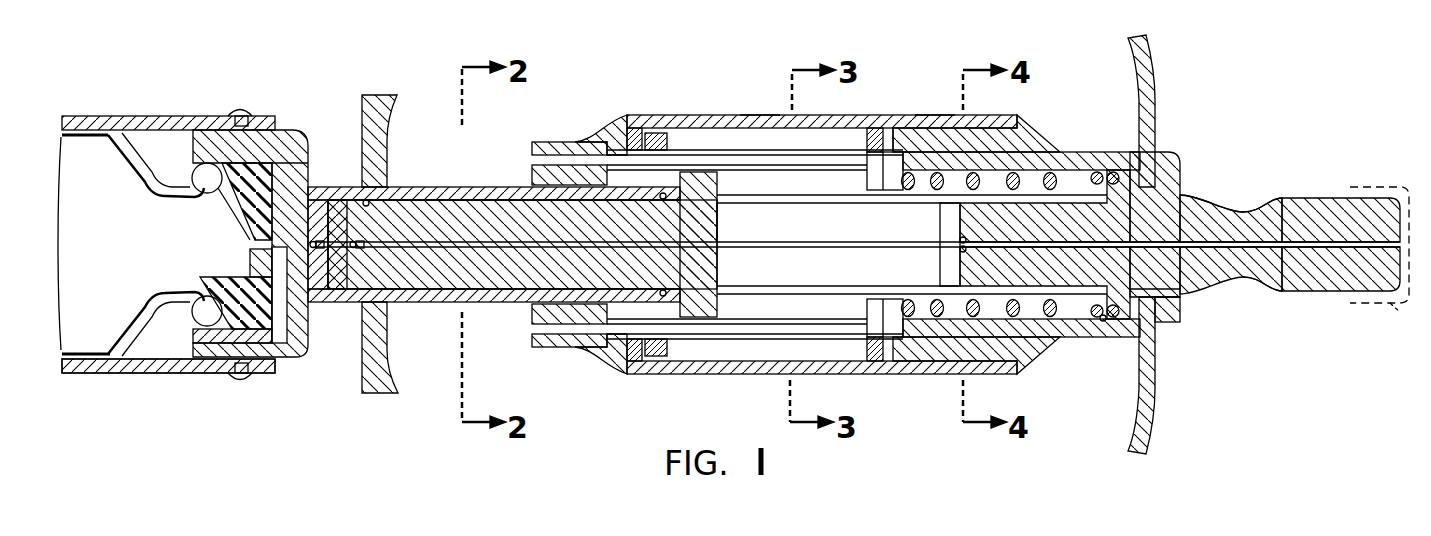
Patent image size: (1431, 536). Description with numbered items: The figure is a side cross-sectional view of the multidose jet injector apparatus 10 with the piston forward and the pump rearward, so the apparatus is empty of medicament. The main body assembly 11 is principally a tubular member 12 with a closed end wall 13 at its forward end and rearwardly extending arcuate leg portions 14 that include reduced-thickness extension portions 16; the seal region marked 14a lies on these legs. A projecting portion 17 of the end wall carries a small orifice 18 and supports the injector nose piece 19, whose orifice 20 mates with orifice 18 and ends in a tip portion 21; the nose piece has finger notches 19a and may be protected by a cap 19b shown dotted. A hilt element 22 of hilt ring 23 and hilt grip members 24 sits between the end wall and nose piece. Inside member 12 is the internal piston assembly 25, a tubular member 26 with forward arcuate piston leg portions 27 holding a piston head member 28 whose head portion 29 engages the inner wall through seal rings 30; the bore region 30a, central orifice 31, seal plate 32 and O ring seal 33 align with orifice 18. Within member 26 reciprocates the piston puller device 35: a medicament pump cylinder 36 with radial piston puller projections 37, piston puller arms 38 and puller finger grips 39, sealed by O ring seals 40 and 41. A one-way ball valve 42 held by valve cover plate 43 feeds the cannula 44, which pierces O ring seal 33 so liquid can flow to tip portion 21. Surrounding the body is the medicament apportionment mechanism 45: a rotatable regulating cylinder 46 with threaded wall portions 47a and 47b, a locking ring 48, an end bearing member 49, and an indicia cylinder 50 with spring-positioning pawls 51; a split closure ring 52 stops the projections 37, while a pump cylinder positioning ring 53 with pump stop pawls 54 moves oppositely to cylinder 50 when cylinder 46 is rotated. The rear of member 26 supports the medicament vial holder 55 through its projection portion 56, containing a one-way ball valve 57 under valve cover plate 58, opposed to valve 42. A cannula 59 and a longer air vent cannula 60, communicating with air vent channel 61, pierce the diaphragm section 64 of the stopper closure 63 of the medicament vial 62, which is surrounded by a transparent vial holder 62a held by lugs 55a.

The jet injector apparatus 10 is at (687, 112).
The main body assembly 11 is at (1066, 152).
The tubular member 12 is at (1100, 166).
The closed end wall 13 is at (1150, 270).
The arcuate leg portions 14 is at (727, 160).
The seal 14a is at (669, 143).
The arcuate leg extension portions 16 is at (563, 160).
The projecting portion 17 is at (1188, 180).
The orifice 18 is at (1206, 200).
The injector nose piece 19 is at (1277, 263).
The finger notches 19a is at (1247, 210).
The cap or closure member 19b is at (1400, 306).
The orifice 20 is at (1280, 235).
The tip portion 21 is at (1409, 225).
The hilt element 22 is at (1160, 330).
The hilt ring 23 is at (1158, 316).
The hilt grip members 24 is at (1158, 87).
The internal piston assembly 25 is at (838, 304).
The tubular member 26 is at (474, 195).
The arcuate piston leg portions 27 is at (810, 198).
The piston head member 28 is at (1045, 244).
The piston head portion 29 is at (1107, 322).
The seal rings 30 is at (1152, 152).
The body bore 30a is at (462, 241).
The orifice 31 is at (998, 247).
The seal plate 32 is at (939, 222).
The O ring seal 33 is at (967, 238).
The piston puller device 35 is at (720, 221).
The medicament pump cylinder 36 is at (504, 219).
The piston puller projections 37 is at (719, 184).
The piston puller arms 38 is at (456, 187).
The puller finger grips 39 is at (397, 116).
The O ring seal 40 is at (372, 200).
The O ring seal 41 is at (665, 202).
The one-way ball valve 42 is at (362, 243).
The valve cover plate 43 is at (348, 292).
The cannula 44 is at (678, 250).
The medicament apportionment mechanism 45 is at (887, 115).
The medicament quantity regulating cylinder 46 is at (806, 127).
The internal threaded wall portion 47a is at (755, 130).
The internal threaded wall portion 47b is at (933, 122).
The locking ring 48 is at (637, 116).
The end bearing member 49 is at (615, 116).
The indicia cylinder 50 is at (1012, 140).
The spring-positioning pawls 51 is at (890, 183).
The split closure ring 52 is at (537, 142).
The pump cylinder positioning ring 53 is at (866, 142).
The pump stop pawls 54 is at (866, 183).
The medicament vial holder 55 is at (294, 128).
The lugs 55a is at (240, 384).
The bottle holder projection portion 56 is at (316, 206).
The one-way ball valve 57 is at (322, 243).
The valve cover plate 58 is at (340, 296).
The cannula 59 is at (312, 156).
The air vent cannula 60 is at (240, 262).
The air vent channel 61 is at (266, 344).
The medicament vial 62 is at (140, 150).
The transparent vial holder 62a is at (136, 373).
The stopper type closure 63 is at (262, 163).
The pierceable diaphragm section 64 is at (257, 234).